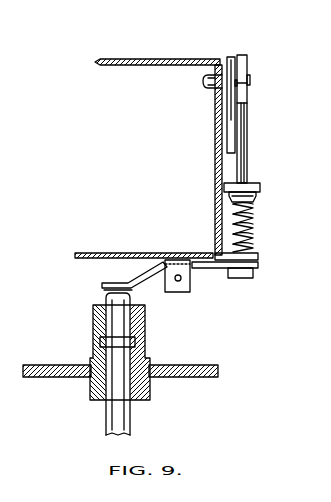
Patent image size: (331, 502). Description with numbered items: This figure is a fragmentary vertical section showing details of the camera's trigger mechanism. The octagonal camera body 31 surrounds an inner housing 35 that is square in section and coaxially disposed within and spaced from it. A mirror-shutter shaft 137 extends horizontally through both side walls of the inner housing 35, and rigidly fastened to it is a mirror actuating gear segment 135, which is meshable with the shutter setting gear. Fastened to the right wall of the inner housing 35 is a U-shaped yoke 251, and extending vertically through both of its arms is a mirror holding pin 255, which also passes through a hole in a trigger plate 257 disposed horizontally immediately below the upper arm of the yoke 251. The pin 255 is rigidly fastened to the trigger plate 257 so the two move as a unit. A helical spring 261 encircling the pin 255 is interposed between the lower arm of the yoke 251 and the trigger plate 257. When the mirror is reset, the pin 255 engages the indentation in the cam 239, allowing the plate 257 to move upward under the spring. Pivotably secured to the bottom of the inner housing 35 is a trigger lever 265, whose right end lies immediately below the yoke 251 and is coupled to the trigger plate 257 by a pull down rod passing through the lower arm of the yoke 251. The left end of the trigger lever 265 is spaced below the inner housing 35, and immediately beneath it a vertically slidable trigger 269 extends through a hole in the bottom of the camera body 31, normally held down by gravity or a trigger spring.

The camera body 31 is at (55, 364).
The inner housing 35 is at (218, 152).
The mirror actuating gear segment 135 is at (230, 57).
The mirror-shutter shaft 137 is at (205, 84).
The cam 239 is at (247, 58).
The U-shaped yoke 251 is at (227, 188).
The mirror holding pin 255 is at (245, 130).
The trigger plate 257 is at (256, 193).
The helical spring 261 is at (252, 234).
The trigger lever 265 is at (143, 278).
The trigger 269 is at (118, 418).